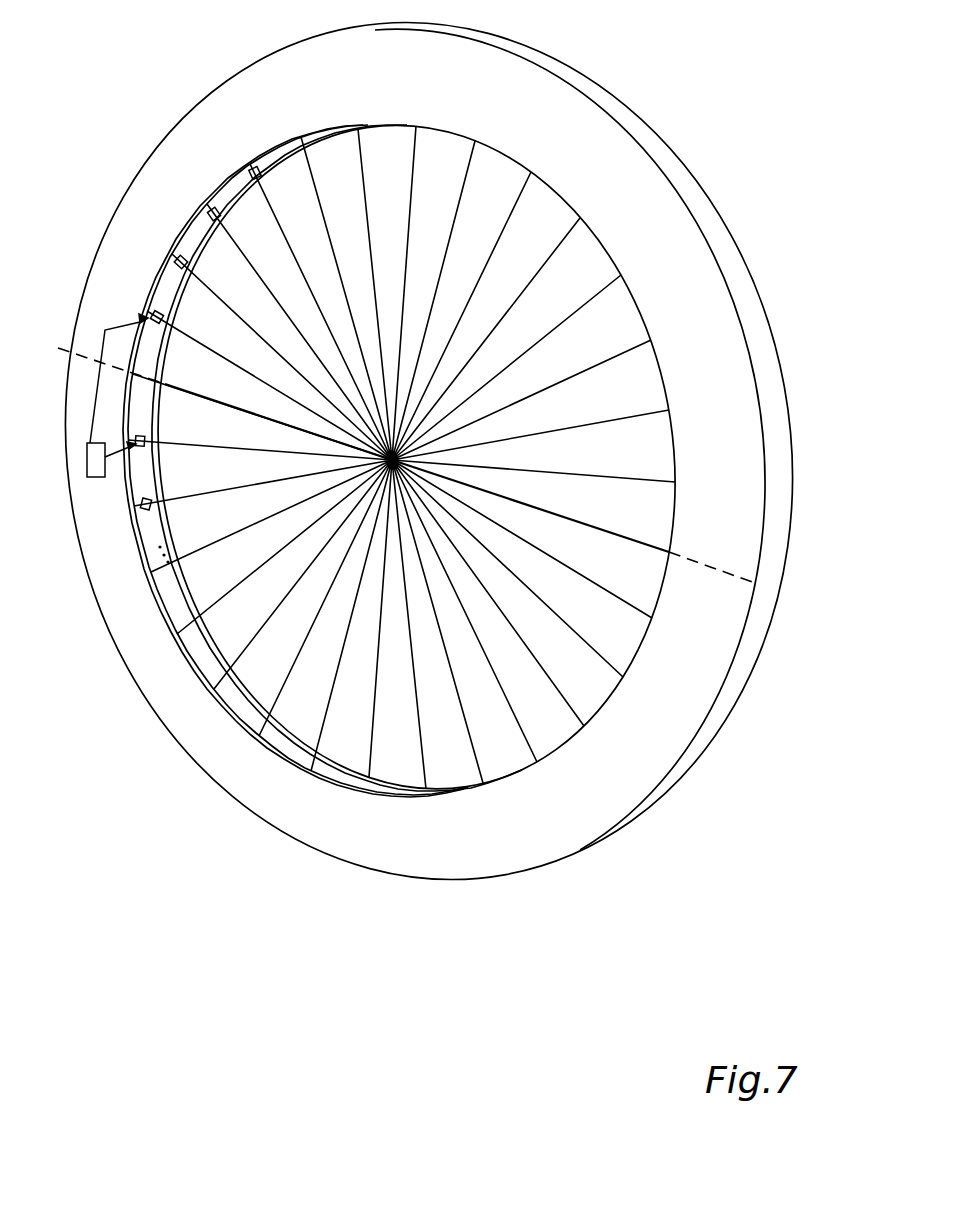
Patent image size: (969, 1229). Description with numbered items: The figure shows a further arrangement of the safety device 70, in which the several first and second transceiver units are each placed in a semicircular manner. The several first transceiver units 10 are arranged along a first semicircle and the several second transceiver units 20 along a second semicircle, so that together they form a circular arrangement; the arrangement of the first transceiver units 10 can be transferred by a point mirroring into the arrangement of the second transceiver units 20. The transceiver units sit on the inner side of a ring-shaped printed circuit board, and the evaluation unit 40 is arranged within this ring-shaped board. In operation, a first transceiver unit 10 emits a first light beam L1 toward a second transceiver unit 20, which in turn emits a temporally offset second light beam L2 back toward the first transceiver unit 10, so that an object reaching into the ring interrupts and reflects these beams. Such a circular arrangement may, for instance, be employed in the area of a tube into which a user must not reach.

The safety device 70 is at (724, 103).
The first transceiver unit 10 is at (155, 312).
The second transceiver unit 20 is at (141, 447).
The evaluation unit 40 is at (94, 478).
The first light beam L1 is at (191, 345).
The second light beam L2 is at (205, 496).